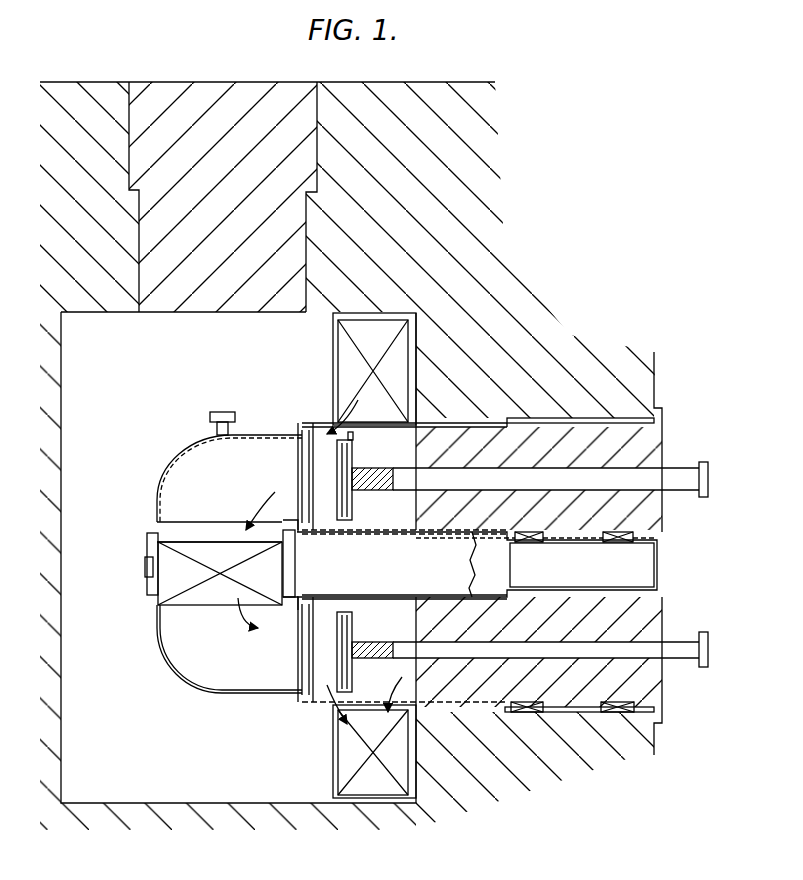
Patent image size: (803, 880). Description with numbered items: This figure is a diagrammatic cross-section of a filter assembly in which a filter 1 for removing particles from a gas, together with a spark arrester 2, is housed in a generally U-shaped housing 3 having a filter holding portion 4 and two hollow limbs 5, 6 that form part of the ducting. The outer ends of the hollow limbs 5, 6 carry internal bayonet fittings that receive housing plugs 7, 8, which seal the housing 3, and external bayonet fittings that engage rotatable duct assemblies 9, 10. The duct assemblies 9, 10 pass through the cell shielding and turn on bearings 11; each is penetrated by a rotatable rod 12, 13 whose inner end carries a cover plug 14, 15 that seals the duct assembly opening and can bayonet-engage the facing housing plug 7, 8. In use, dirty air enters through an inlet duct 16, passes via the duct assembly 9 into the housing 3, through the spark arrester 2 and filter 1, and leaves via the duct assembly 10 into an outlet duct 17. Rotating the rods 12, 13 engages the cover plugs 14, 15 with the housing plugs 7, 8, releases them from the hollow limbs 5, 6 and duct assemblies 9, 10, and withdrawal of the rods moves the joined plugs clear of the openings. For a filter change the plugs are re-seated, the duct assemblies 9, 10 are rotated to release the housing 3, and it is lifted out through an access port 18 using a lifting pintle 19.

The filter 1 is at (195, 598).
The spark arrester 2 is at (175, 530).
The housing 3 is at (168, 462).
The filter holding portion 4 is at (141, 572).
The hollow limb 5 is at (264, 431).
The hollow limb 6 is at (233, 697).
The housing plug 7 is at (308, 473).
The housing plug 8 is at (298, 646).
The duct assembly 9 is at (643, 441).
The duct assembly 10 is at (652, 690).
The bearings 11 is at (532, 715).
The rotatable rod 12 is at (685, 483).
The rotatable rod 13 is at (672, 647).
The cover plug 14 is at (352, 437).
The cover plug 15 is at (354, 682).
The inlet duct 16 is at (345, 342).
The outlet duct 17 is at (345, 779).
The access port 18 is at (232, 145).
The lifting pintle 19 is at (222, 412).